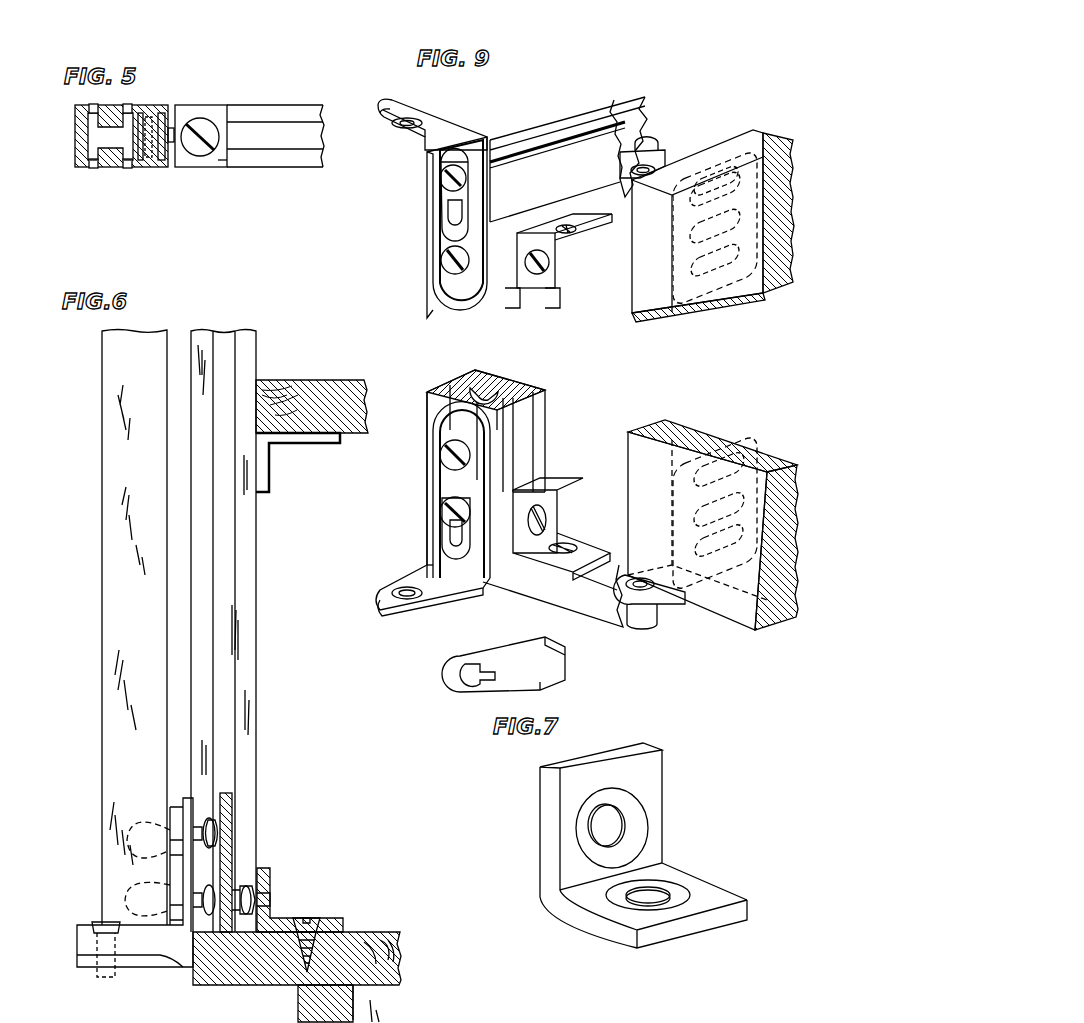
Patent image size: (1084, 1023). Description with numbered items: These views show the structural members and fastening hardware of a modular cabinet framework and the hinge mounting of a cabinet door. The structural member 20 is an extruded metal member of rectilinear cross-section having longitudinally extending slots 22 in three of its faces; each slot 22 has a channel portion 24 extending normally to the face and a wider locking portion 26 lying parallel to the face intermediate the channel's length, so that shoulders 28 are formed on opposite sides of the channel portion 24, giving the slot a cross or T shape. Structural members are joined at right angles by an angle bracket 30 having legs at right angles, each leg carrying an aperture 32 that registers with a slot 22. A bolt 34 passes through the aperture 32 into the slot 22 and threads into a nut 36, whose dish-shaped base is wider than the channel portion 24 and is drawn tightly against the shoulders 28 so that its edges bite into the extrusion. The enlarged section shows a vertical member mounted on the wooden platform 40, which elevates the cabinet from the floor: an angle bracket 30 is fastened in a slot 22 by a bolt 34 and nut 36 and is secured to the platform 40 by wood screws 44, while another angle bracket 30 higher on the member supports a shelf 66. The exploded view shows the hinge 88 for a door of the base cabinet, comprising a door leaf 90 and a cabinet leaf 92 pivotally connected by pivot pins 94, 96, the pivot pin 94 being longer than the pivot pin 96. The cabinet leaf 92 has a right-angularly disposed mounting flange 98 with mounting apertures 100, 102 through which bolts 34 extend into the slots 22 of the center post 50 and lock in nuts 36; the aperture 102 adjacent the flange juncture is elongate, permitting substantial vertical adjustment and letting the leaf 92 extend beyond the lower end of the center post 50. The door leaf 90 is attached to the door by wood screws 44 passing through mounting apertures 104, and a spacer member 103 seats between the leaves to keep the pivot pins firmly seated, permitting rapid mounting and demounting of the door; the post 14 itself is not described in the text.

In FIG. 6, the post 14 is at (110, 583).
In FIG. 9, the post 14 is at (758, 133).
In FIG. 5, the structural member 20 is at (278, 107).
In FIG. 6, the structural member 20 is at (236, 603).
In FIG. 9, the structural member 20 is at (568, 159).
In FIG. 5, the slot 22 is at (75, 125).
In FIG. 5, the channel portion 24 is at (128, 167).
In FIG. 5, the locking portion 26 is at (93, 167).
In FIG. 5, the shoulders 28 is at (185, 120).
In FIG. 5, the angle bracket 30 is at (221, 163).
In FIG. 6, the angle bracket 30 is at (307, 446).
In FIG. 9, the angle bracket 30 is at (555, 240).
In FIG. 7, the angle bracket 30 is at (643, 845).
In FIG. 7, the aperture 32 is at (622, 818).
In FIG. 9, the bolt 34 is at (440, 518).
In FIG. 5, the nut 36 is at (150, 158).
In FIG. 6, the nut 36 is at (228, 850).
In FIG. 6, the platform 40 is at (400, 947).
In FIG. 9, the platform 40 is at (540, 598).
In FIG. 6, the wood screw 44 is at (318, 925).
In FIG. 6, the center post 50 is at (253, 365).
In FIG. 9, the center post 50 is at (540, 462).
In FIG. 6, the shelf 66 is at (322, 380).
In FIG. 6, the hinge 88 is at (185, 970).
In FIG. 9, the hinge 88 is at (472, 140).
In FIG. 9, the door leaf 90 is at (665, 150).
In FIG. 9, the cabinet leaf 92 is at (413, 107).
In FIG. 9, the pivot pin 94 is at (650, 618).
In FIG. 9, the pivot pin 96 is at (640, 148).
In FIG. 9, the mounting flange 98 is at (470, 156).
In FIG. 9, the mounting aperture 100 is at (460, 470).
In FIG. 9, the mounting aperture 102 is at (462, 150).
In FIG. 9, the spacer member 103 is at (460, 660).
In FIG. 9, the mounting aperture 104 is at (690, 213).